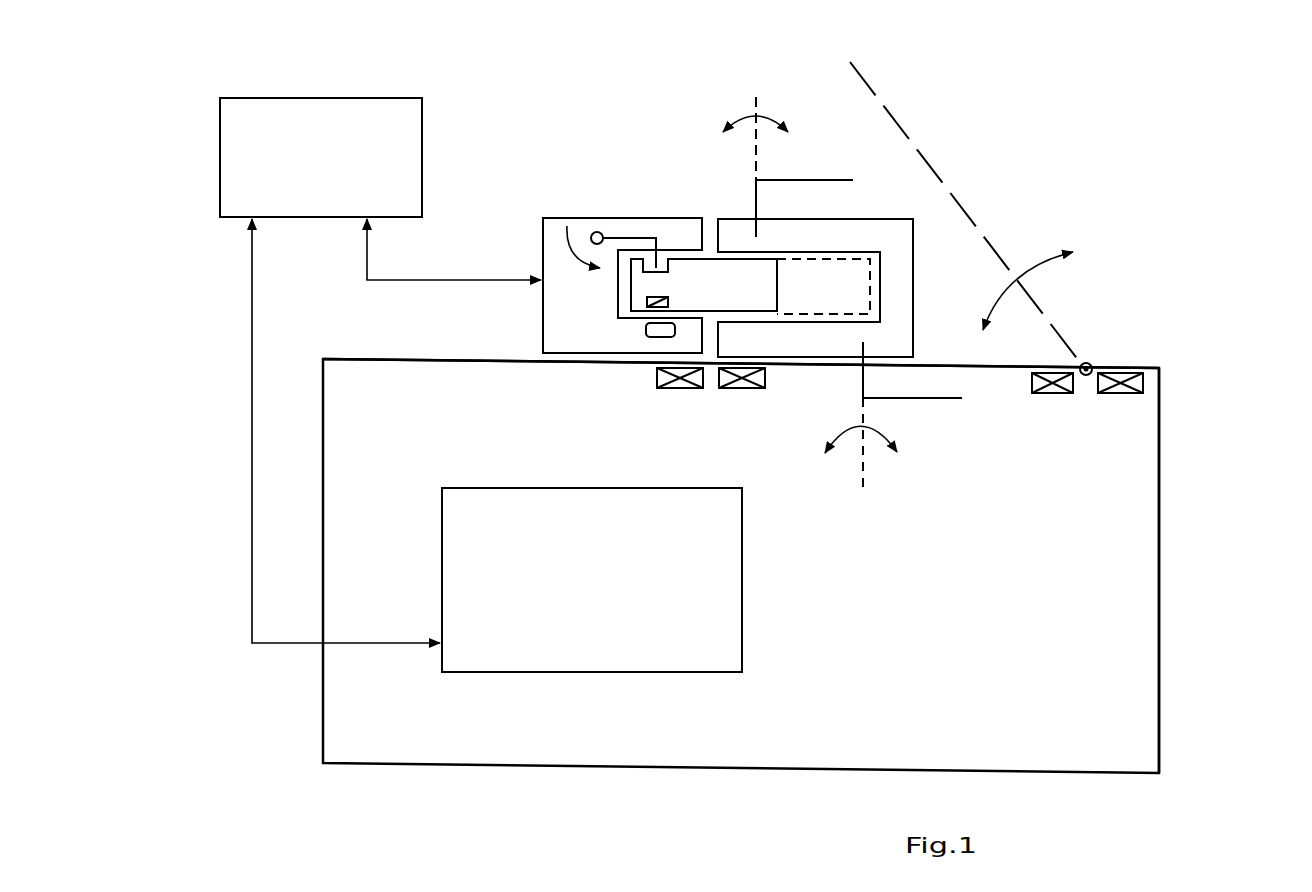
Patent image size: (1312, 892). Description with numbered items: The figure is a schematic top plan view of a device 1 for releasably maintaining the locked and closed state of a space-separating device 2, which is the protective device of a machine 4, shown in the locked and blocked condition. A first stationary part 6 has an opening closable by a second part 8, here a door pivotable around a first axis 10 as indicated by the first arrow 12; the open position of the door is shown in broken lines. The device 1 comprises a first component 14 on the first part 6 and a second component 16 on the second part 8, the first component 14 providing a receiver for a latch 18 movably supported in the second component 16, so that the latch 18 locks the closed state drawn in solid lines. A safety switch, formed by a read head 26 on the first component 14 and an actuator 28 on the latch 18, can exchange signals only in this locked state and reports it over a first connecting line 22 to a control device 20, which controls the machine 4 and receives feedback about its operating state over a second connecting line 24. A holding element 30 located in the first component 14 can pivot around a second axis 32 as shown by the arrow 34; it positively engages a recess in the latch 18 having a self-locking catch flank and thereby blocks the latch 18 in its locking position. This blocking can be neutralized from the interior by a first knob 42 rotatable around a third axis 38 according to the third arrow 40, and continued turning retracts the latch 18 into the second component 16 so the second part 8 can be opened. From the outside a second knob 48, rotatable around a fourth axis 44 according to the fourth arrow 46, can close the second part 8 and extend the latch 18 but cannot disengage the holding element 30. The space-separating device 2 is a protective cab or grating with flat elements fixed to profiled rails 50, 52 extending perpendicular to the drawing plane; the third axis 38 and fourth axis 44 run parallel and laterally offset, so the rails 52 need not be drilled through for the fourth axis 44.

The device 1 is at (658, 122).
The space-separating device 2 is at (1203, 527).
The machine 4 is at (742, 605).
The first stationary part 6 is at (1160, 390).
The second part 8 is at (994, 370).
The first axis 10 is at (1091, 364).
The first arrow 12 is at (1020, 268).
The first component 14 is at (557, 217).
The second component 16 is at (885, 219).
The latch 18 is at (713, 275).
The control device 20 is at (220, 157).
The first connecting line 22 is at (427, 280).
The second connecting line 24 is at (250, 437).
The read head 26 is at (655, 338).
The actuator 28 is at (670, 297).
The holding element 30 is at (627, 243).
The second axis 32 is at (600, 232).
The arrow 34 is at (543, 262).
The third axis 38 is at (863, 481).
The third arrow 40 is at (845, 428).
The first knob 42 is at (925, 400).
The fourth axis 44 is at (756, 100).
The fourth arrow 46 is at (766, 115).
The second knob 48 is at (805, 180).
The profiled rail 50 is at (675, 388).
The profiled rail 52 is at (738, 388).